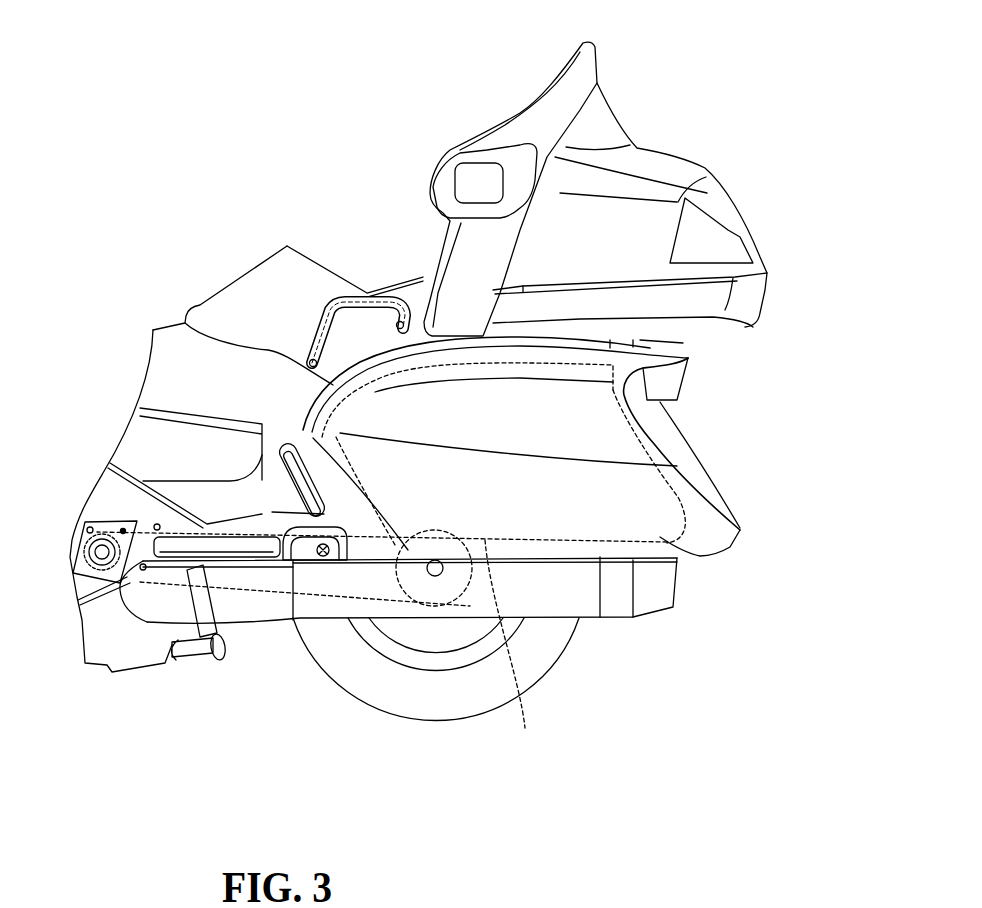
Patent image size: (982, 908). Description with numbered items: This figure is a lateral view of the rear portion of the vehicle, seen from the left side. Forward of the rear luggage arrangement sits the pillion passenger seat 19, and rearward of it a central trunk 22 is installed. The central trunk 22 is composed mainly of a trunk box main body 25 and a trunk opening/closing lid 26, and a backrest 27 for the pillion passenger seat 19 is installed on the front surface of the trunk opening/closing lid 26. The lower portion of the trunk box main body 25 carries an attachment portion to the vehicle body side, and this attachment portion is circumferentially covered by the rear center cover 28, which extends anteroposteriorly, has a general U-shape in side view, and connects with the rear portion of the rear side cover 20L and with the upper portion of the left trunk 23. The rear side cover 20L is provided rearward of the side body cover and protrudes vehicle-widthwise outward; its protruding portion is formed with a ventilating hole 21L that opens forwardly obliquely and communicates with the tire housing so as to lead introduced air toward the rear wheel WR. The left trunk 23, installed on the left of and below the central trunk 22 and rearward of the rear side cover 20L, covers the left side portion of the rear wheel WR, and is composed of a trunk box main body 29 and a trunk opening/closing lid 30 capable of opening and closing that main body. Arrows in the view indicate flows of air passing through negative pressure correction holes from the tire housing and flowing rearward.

The pillion passenger seat 19 is at (325, 270).
The rear side cover 20L is at (262, 478).
The ventilating hole 21L is at (283, 497).
The central trunk 22 is at (685, 90).
The left trunk 23 is at (427, 438).
The trunk box main body 25 is at (762, 253).
The trunk opening/closing lid 26 is at (677, 155).
The backrest 27 is at (540, 88).
The rear center cover 28 is at (510, 333).
The trunk box main body 29 is at (509, 649).
The trunk opening/closing lid 30 is at (572, 517).
The rear wheel WR is at (568, 648).